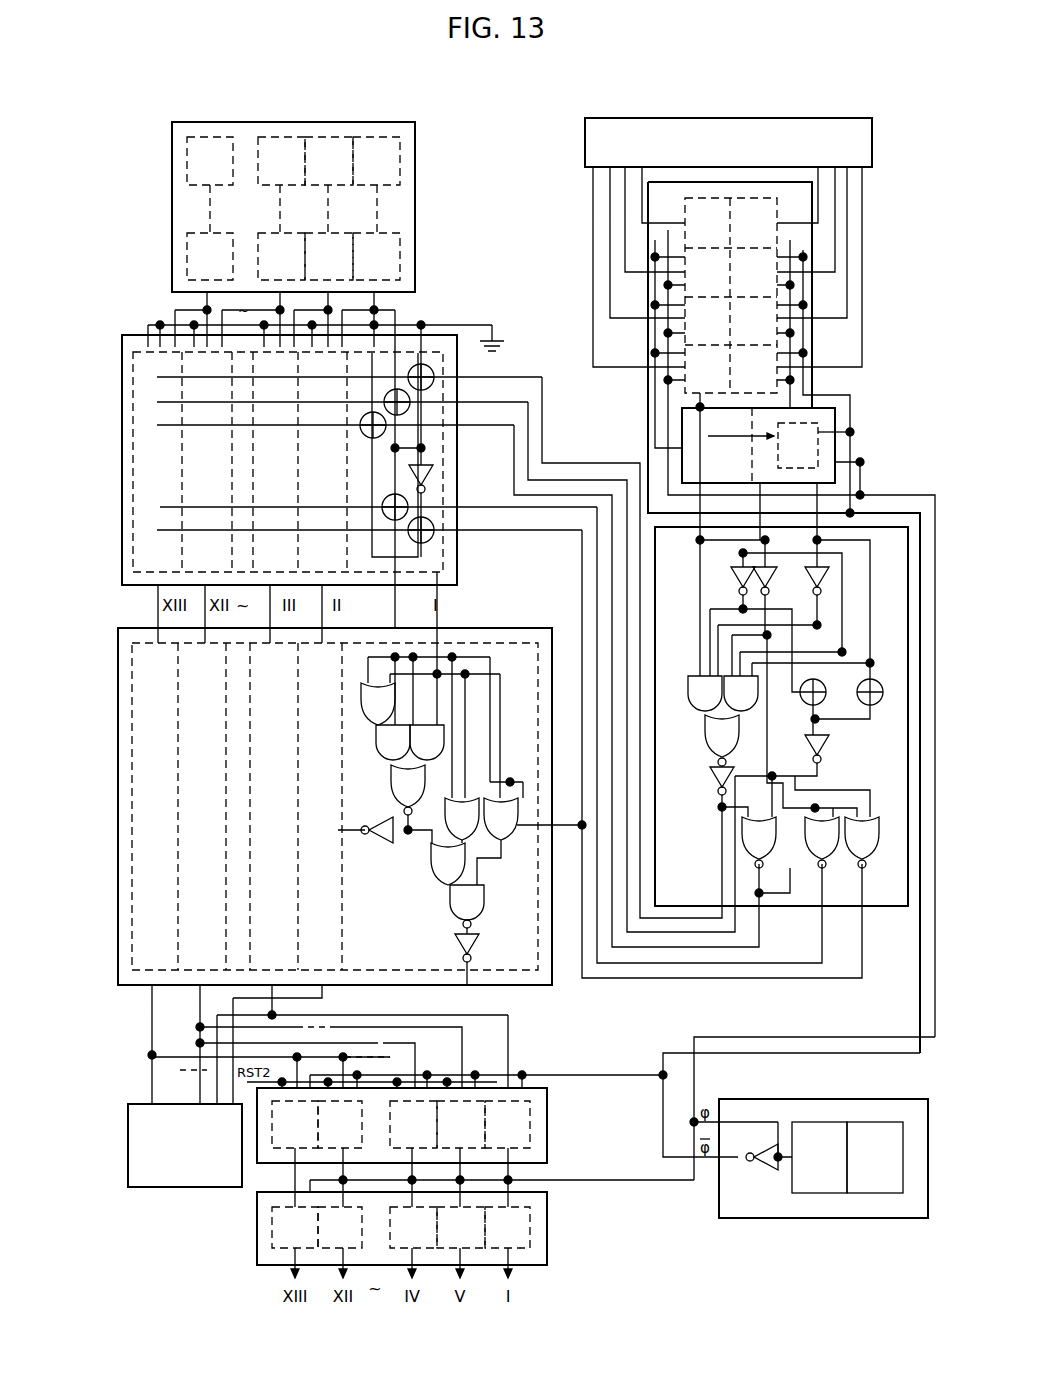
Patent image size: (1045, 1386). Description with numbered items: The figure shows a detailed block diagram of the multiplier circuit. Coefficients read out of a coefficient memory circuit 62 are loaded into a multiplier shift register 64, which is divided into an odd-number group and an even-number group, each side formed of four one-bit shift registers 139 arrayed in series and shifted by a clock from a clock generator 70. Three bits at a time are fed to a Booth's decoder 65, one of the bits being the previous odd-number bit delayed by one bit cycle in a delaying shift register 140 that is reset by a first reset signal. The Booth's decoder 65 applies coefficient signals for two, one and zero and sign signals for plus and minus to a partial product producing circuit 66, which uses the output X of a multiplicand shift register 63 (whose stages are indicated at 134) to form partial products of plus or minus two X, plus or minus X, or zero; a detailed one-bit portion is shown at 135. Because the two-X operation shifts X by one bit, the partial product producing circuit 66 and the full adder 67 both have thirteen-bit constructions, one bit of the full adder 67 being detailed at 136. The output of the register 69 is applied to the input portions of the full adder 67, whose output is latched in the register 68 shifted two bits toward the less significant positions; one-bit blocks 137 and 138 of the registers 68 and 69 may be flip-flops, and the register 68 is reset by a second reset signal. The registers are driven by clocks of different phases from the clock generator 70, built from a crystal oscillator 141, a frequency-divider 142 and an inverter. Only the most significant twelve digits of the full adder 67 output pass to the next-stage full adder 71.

The coefficient memory circuit 62 is at (584, 124).
The multiplicand shift register 63 is at (415, 200).
The shift register stages 134 is at (400, 254).
The multiplier shift register 64 is at (811, 617).
The 1-bit shift register 139 is at (682, 395).
The delaying shift register 140 is at (778, 444).
The Booth's decoder 65 is at (810, 681).
The partial product producing circuit 66 is at (460, 496).
The one-bit circuit of partial product producing circuit 135 is at (443, 465).
The full adder 67 is at (486, 628).
The one-bit circuit of full adder 136 is at (442, 984).
The register 68 is at (547, 1130).
The one-bit block of register 137 is at (530, 1148).
The register 69 is at (547, 1232).
The one-bit block of register 138 is at (530, 1250).
The clock generator 70 is at (928, 1218).
The crystal oscillator 141 is at (884, 1122).
The frequency-divider 142 is at (824, 1122).
The full adder 71 is at (128, 1187).